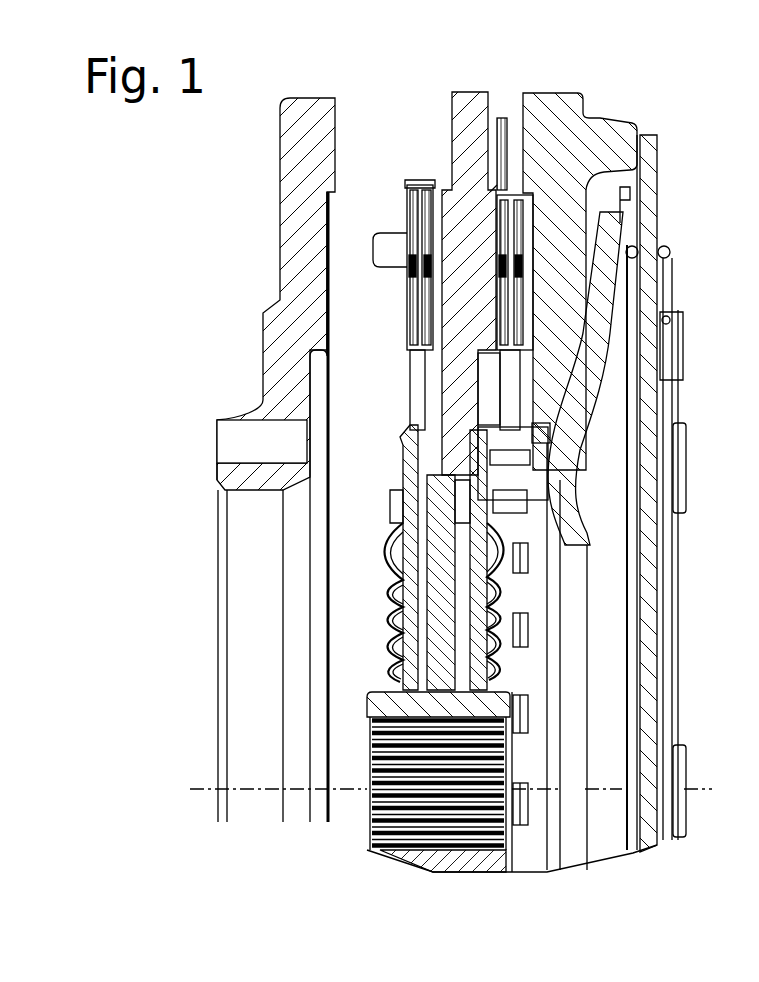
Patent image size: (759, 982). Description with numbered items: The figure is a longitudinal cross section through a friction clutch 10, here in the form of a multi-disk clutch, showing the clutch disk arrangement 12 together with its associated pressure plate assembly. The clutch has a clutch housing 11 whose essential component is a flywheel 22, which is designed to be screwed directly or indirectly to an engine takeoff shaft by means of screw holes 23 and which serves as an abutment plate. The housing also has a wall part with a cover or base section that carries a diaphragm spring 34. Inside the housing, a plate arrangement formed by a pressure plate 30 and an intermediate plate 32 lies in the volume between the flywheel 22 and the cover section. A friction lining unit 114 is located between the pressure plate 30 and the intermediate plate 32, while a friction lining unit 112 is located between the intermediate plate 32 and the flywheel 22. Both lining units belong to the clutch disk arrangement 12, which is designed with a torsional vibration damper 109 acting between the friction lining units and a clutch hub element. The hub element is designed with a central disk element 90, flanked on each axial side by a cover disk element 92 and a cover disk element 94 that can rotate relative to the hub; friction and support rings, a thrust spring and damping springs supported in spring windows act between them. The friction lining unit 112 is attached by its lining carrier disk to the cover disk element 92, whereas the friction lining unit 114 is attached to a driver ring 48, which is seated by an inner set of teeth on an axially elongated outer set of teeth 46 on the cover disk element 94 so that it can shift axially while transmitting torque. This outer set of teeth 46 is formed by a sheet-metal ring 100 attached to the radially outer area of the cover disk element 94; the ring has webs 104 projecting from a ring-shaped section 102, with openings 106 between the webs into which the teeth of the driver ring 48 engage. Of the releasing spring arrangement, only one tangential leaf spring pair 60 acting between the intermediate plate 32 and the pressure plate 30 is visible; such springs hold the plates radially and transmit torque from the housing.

The friction clutch 10 is at (632, 102).
The clutch housing 11 is at (290, 219).
The clutch disk arrangement 12 is at (372, 285).
The flywheel 22 is at (290, 347).
The screw holes 23 is at (250, 447).
The pressure plate 30 is at (562, 138).
The intermediate plate 32 is at (470, 140).
The diaphragm spring 34 is at (645, 272).
The outer set of teeth 46 is at (515, 621).
The driver ring 48 is at (538, 355).
The tangential leaf spring pair 60 is at (510, 150).
The central disk element 90 is at (362, 503).
The cover disk element 92 is at (408, 432).
The cover disk element 94 is at (567, 467).
The sheet-metal ring 100 is at (520, 665).
The ring-shaped section 102 is at (537, 722).
The webs 104 is at (515, 527).
The openings 106 is at (527, 803).
The torsional vibration damper 109 is at (361, 643).
The friction lining unit 112 is at (415, 315).
The friction lining unit 114 is at (545, 214).